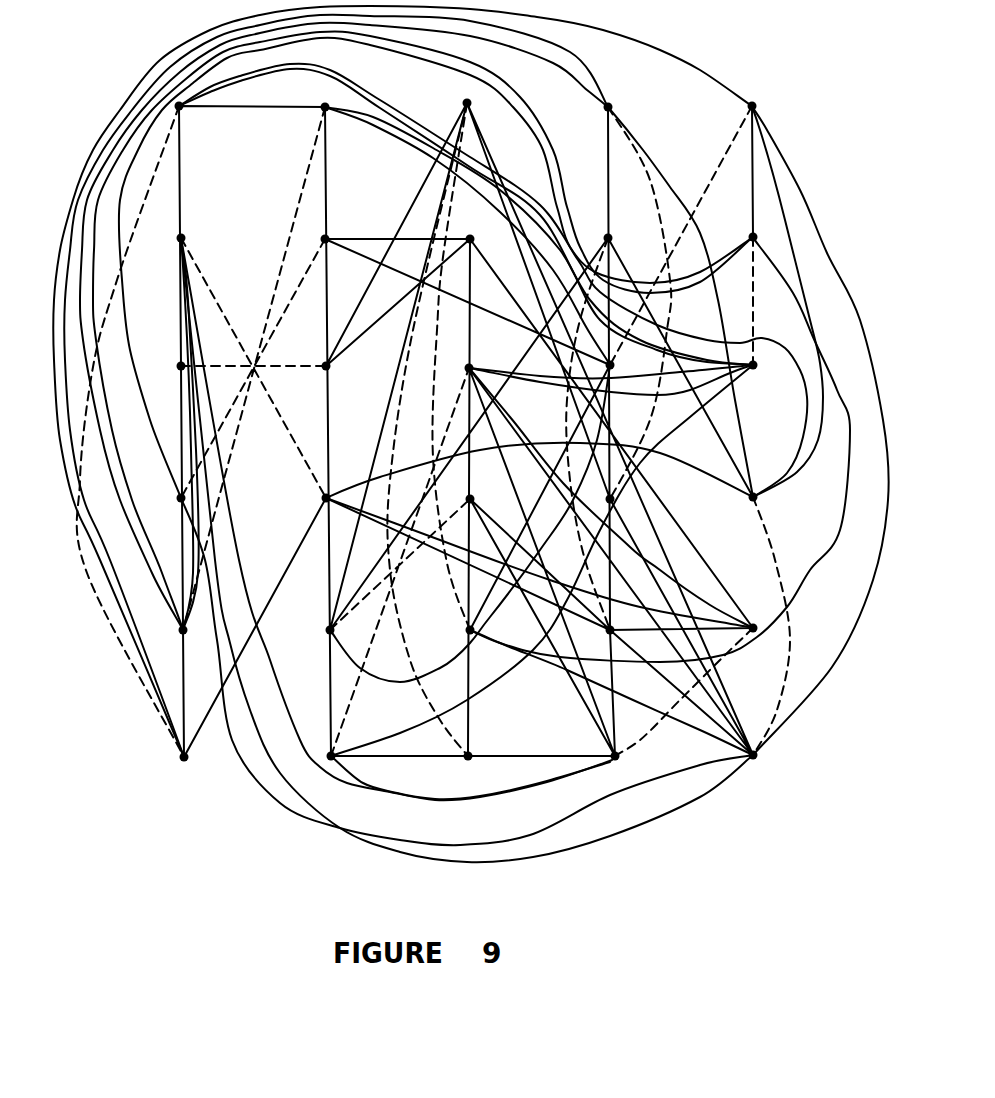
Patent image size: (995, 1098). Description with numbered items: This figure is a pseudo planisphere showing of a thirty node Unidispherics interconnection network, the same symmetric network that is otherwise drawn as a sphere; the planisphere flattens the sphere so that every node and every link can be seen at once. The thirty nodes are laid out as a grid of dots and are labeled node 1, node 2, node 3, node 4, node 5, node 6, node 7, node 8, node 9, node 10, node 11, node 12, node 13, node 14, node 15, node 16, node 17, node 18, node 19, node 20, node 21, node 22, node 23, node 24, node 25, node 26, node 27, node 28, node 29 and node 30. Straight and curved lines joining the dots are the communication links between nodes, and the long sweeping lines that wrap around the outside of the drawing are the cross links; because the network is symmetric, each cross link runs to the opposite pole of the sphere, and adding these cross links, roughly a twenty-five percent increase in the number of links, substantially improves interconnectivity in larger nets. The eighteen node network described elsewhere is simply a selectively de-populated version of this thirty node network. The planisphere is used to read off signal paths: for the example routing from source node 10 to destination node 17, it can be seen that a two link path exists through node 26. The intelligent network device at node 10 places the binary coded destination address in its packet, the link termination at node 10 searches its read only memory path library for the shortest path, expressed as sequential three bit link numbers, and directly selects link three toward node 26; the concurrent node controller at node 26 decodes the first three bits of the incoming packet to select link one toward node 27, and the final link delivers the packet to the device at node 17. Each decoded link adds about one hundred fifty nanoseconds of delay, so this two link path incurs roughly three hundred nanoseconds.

The node 1 is at (184, 757).
The node 2 is at (183, 630).
The node 3 is at (181, 498).
The node 4 is at (181, 366).
The node 5 is at (181, 238).
The node 6 is at (179, 106).
The node 7 is at (325, 107).
The node 8 is at (325, 239).
The node 9 is at (326, 366).
The source node 10 is at (326, 498).
The node 11 is at (330, 630).
The node 12 is at (331, 756).
The node 13 is at (468, 756).
The node 14 is at (470, 630).
The node 15 is at (470, 499).
The node 16 is at (469, 368).
The destination node 17 is at (470, 226).
The node 18 is at (467, 103).
The node 19 is at (608, 107).
The node 20 is at (608, 238).
The node 21 is at (610, 365).
The node 22 is at (610, 499).
The node 23 is at (610, 630).
The node 24 is at (615, 756).
The node 25 is at (753, 755).
The intermediate node 26 is at (753, 628).
The node 27 is at (753, 497).
The node 28 is at (753, 365).
The node 29 is at (753, 237).
The node 30 is at (752, 106).